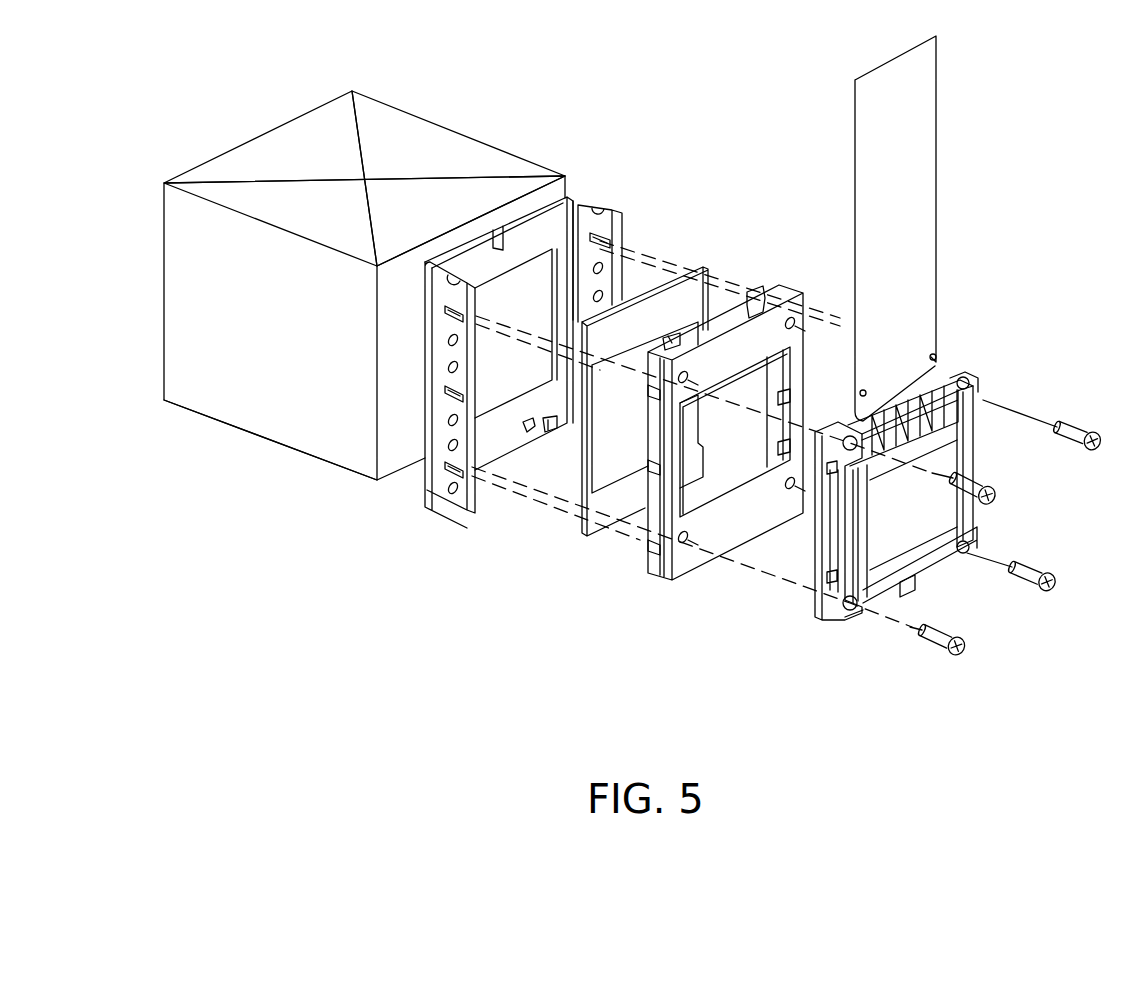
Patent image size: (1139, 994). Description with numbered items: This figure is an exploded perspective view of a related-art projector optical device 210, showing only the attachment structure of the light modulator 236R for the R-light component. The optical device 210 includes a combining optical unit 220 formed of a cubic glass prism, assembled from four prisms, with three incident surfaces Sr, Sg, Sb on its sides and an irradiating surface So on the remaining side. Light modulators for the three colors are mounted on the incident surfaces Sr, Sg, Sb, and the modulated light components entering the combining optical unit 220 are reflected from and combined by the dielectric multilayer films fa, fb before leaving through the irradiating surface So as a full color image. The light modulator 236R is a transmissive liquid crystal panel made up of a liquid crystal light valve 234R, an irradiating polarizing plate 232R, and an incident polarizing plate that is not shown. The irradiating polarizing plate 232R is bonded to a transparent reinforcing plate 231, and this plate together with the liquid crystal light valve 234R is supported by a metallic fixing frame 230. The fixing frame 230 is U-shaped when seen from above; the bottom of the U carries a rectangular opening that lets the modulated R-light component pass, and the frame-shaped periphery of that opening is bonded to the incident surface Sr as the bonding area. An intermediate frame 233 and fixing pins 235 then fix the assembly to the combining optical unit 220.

The optical device 210 is at (698, 130).
The combining optical unit 220 is at (390, 120).
The incident surface Sb is at (251, 158).
The incident surface Sg is at (482, 162).
The incident surface Sr is at (392, 458).
The irradiating surface So is at (253, 420).
The dielectric multilayer film fa is at (318, 178).
The dielectric multilayer film fb is at (367, 203).
The fixing frame 230 is at (588, 202).
The transparent reinforcing plate 231 is at (698, 262).
The irradiating polarizing plate 232R is at (601, 478).
The intermediate frame 233 is at (780, 290).
The liquid crystal light valve 234R is at (820, 590).
The fixing pins 235 is at (1000, 490).
The light modulator 236R is at (762, 664).